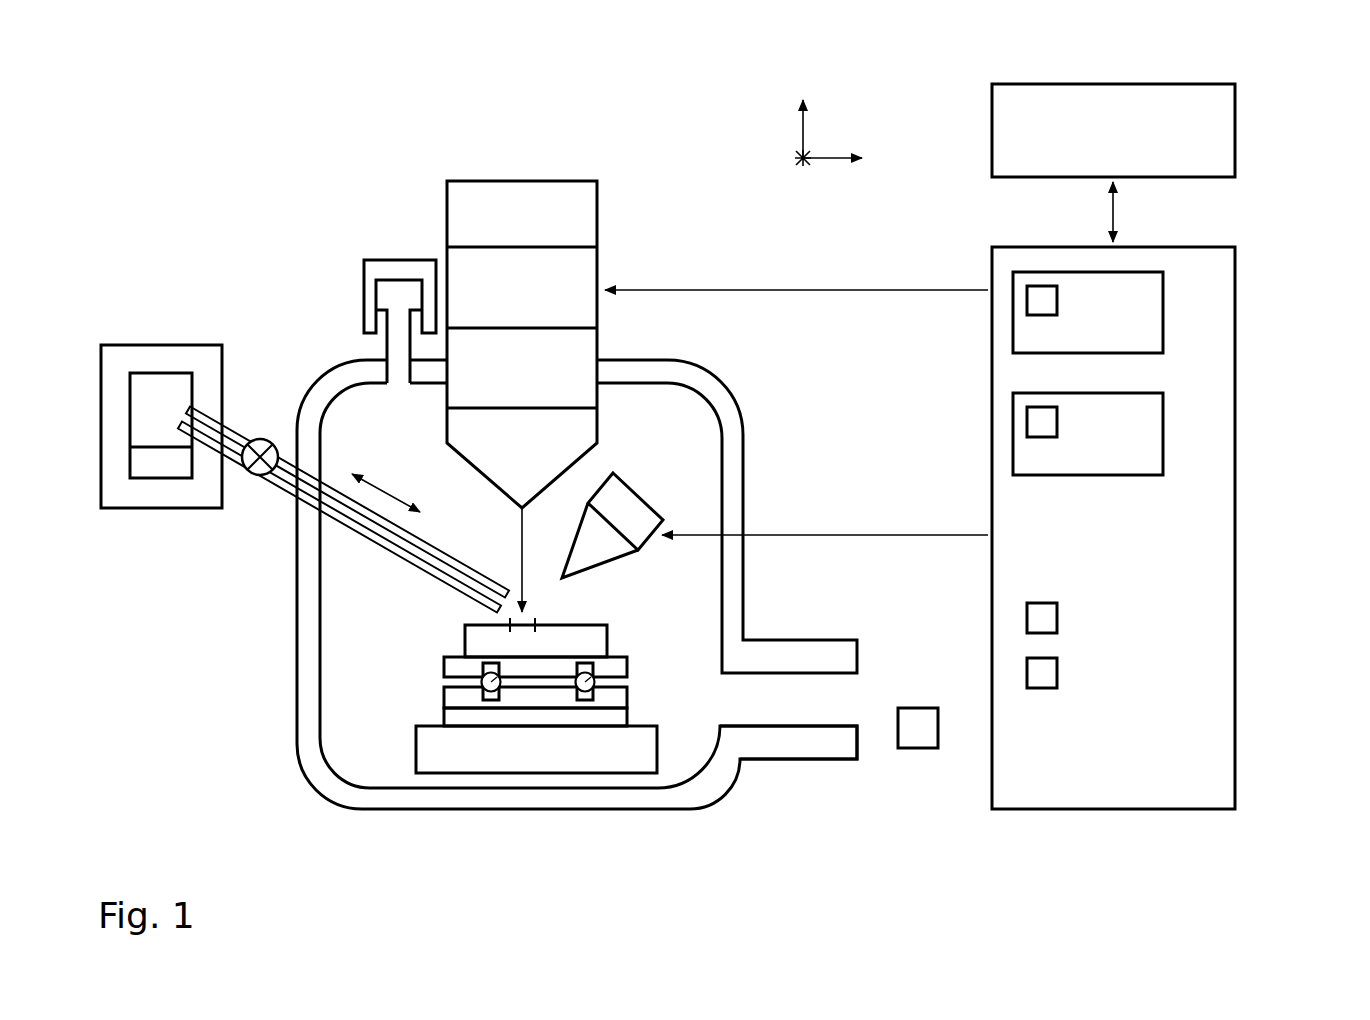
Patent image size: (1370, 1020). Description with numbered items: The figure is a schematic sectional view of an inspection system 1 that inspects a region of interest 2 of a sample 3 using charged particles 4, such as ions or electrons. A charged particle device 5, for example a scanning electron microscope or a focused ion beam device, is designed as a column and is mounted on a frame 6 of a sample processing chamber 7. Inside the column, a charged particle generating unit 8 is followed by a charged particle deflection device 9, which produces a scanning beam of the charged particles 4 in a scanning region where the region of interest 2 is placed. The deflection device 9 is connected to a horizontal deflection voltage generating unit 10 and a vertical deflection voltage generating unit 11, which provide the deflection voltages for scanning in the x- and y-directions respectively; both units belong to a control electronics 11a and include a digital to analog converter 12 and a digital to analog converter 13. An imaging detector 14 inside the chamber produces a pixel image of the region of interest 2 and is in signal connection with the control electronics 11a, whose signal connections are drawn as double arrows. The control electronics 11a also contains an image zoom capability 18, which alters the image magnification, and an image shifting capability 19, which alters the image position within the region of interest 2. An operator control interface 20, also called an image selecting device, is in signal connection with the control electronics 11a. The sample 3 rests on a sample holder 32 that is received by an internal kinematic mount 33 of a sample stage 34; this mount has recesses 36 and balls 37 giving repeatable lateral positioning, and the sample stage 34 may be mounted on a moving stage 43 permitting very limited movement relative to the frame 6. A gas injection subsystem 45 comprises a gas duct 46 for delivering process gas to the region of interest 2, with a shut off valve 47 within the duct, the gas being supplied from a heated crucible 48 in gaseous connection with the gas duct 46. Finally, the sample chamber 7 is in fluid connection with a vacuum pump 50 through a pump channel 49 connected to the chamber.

The inspection system 1 is at (409, 147).
The region of interest 2 is at (508, 620).
The sample 3 is at (598, 638).
The charged particles 4 is at (518, 562).
The charged particle device 5 is at (561, 167).
The frame 6 is at (698, 376).
The sample processing chamber 7 is at (725, 370).
The charged particle generating unit 8 is at (522, 195).
The charged particle deflection device 9 is at (604, 247).
The horizontal deflection voltage generating unit 10 is at (1155, 318).
The vertical deflection voltage generating unit 11 is at (1157, 440).
The control electronics 11a is at (1105, 800).
The digital to analog converter 12 is at (1047, 300).
The digital to analog converter 13 is at (1047, 422).
The imaging detector 14 is at (642, 485).
The image zoom capability 18 is at (1047, 618).
The image shifting capability 19 is at (1047, 673).
The operator control interface 20 is at (1218, 118).
The sample holder 32 is at (455, 667).
The internal kinematic mount 33 is at (455, 698).
The sample stage 34 is at (455, 717).
The recesses 36 is at (491, 701).
The balls 37 is at (583, 692).
The moving stage 43 is at (475, 762).
The gas injection subsystem 45 is at (274, 362).
The gas duct 46 is at (385, 543).
The shut off valve 47 is at (262, 440).
The heated crucible 48 is at (158, 392).
The pump channel 49 is at (788, 703).
The vacuum pump 50 is at (922, 741).